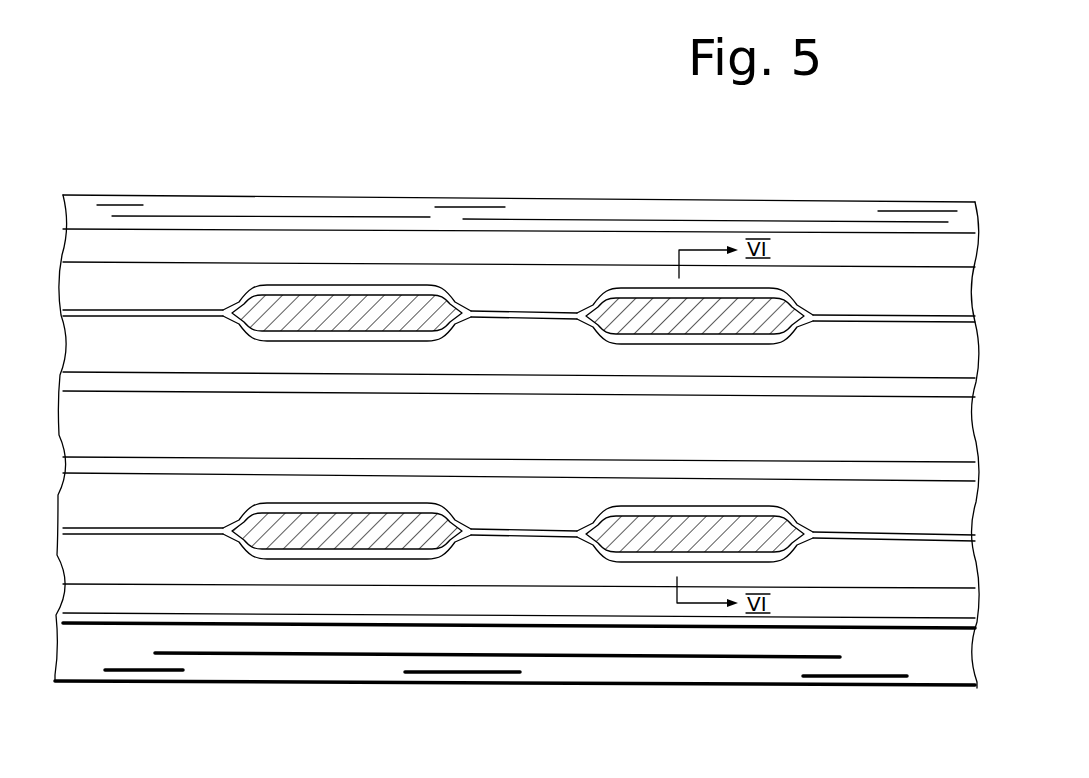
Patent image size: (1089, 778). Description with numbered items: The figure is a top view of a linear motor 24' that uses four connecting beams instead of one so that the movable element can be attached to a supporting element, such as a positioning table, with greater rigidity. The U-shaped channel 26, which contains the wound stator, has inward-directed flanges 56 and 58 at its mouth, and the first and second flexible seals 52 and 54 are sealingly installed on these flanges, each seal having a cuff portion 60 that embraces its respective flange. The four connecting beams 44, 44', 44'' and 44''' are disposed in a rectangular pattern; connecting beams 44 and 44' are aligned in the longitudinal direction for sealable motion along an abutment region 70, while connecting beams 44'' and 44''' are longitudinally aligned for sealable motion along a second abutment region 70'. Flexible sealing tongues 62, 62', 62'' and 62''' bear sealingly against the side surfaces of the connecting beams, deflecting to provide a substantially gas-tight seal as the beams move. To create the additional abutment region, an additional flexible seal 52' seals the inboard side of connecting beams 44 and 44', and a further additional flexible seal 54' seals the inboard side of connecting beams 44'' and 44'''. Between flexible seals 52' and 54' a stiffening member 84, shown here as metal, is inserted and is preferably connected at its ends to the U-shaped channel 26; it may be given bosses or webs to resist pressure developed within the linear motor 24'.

The linear motor 24' is at (517, 386).
The U-shaped channel 26 is at (905, 201).
The inward-directed flange 56 is at (647, 237).
The cuff portion 60 is at (935, 247).
The first flexible seal 52 is at (570, 302).
The additional flexible seal 52' is at (567, 408).
The flexible sealing tongue 62 is at (479, 278).
The flexible sealing tongue 62' is at (572, 342).
The flexible sealing tongue 62'' is at (774, 515).
The flexible sealing tongue 62''' is at (569, 562).
The abutment region 70 is at (894, 341).
The second abutment region 70' is at (894, 557).
The connecting beam 44 is at (369, 310).
The connecting beam 44' is at (723, 328).
The connecting beam 44'' is at (390, 527).
The connecting beam 44''' is at (735, 529).
The stiffening member 84 is at (953, 437).
The further additional flexible seal 54' is at (566, 502).
The second flexible seal 54 is at (562, 640).
The inward-directed flange 58 is at (722, 675).